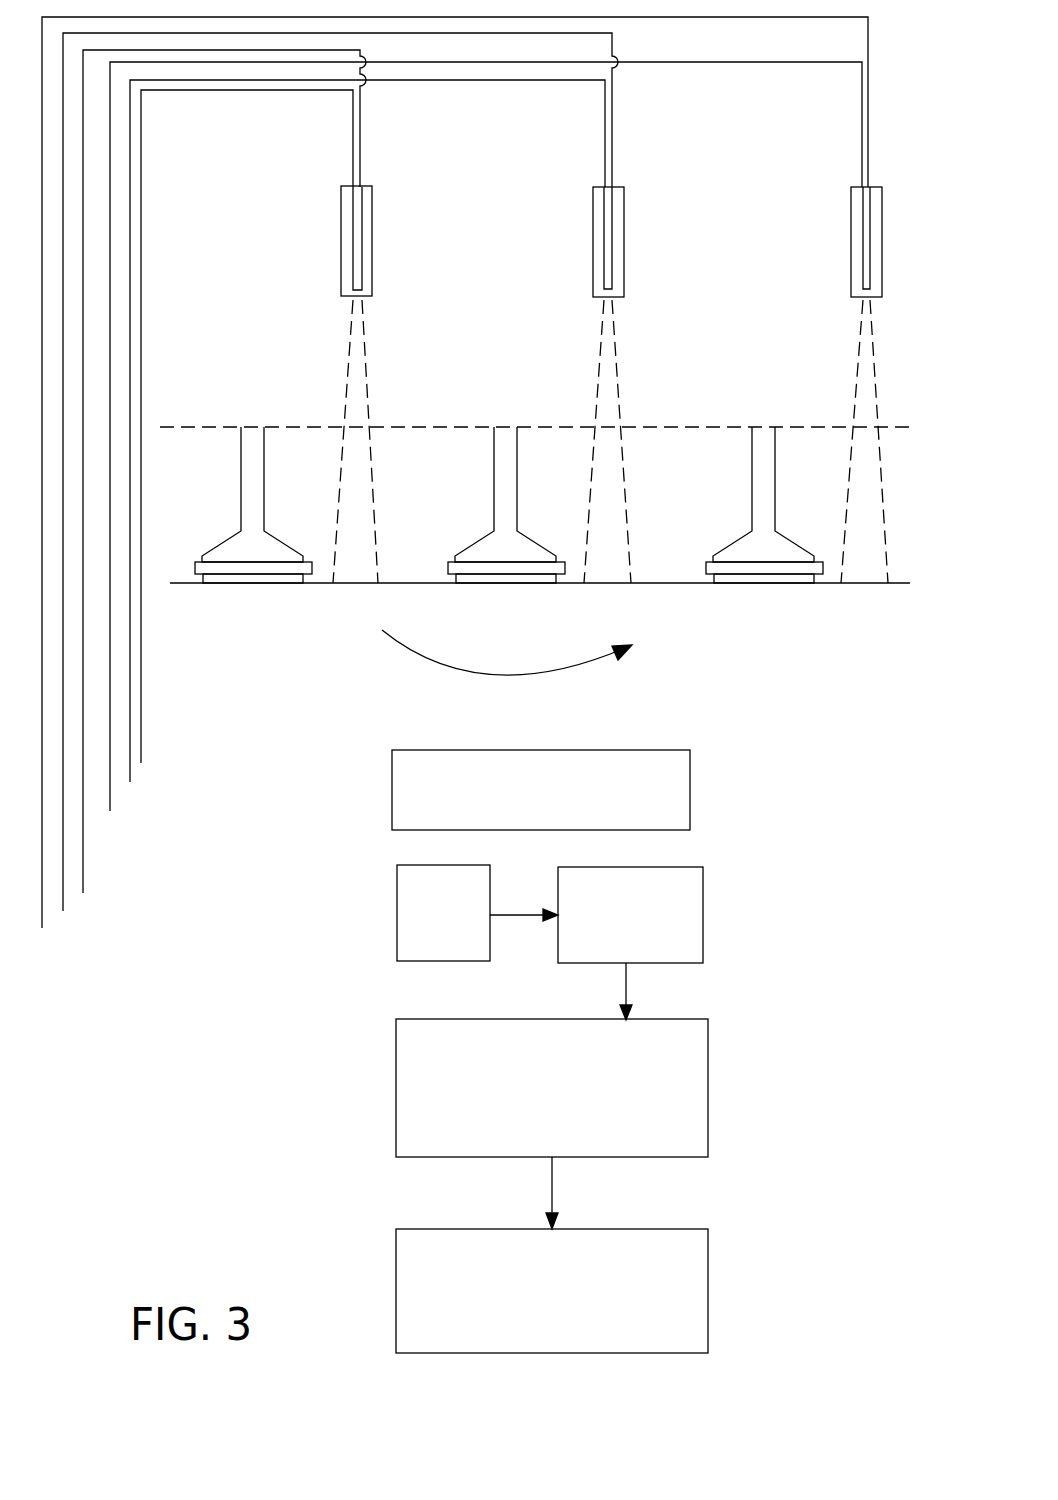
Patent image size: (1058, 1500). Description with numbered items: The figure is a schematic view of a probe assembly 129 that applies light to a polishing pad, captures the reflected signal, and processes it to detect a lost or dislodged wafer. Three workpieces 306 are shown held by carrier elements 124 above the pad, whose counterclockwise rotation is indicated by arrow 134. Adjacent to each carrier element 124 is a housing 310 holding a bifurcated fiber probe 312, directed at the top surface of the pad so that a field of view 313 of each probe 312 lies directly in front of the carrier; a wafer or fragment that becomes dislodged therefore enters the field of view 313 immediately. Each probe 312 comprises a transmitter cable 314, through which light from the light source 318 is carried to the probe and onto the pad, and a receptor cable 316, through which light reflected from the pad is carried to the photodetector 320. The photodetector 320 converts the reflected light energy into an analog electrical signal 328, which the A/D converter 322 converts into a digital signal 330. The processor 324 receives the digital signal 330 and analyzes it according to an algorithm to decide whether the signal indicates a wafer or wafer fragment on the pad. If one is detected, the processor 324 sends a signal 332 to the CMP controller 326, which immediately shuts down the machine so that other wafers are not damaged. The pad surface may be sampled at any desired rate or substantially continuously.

The carrier element 124 is at (232, 550).
The probe assembly 129 is at (233, 1128).
The arrow 134 is at (465, 673).
The workpiece 306 is at (250, 585).
The housing 310 is at (372, 220).
The bifurcated fiber probe 312 is at (362, 270).
The field of view 313 is at (358, 577).
The transmitter cable 314 is at (163, 92).
The receptor cable 316 is at (271, 50).
The light source 318 is at (690, 776).
The photodetector 320 is at (445, 962).
The A/D converter 322 is at (703, 912).
The processor 324 is at (708, 1098).
The CMP controller 326 is at (630, 1229).
The analog electrical signal 328 is at (525, 918).
The digital signal 330 is at (626, 983).
The signal 332 is at (554, 1195).